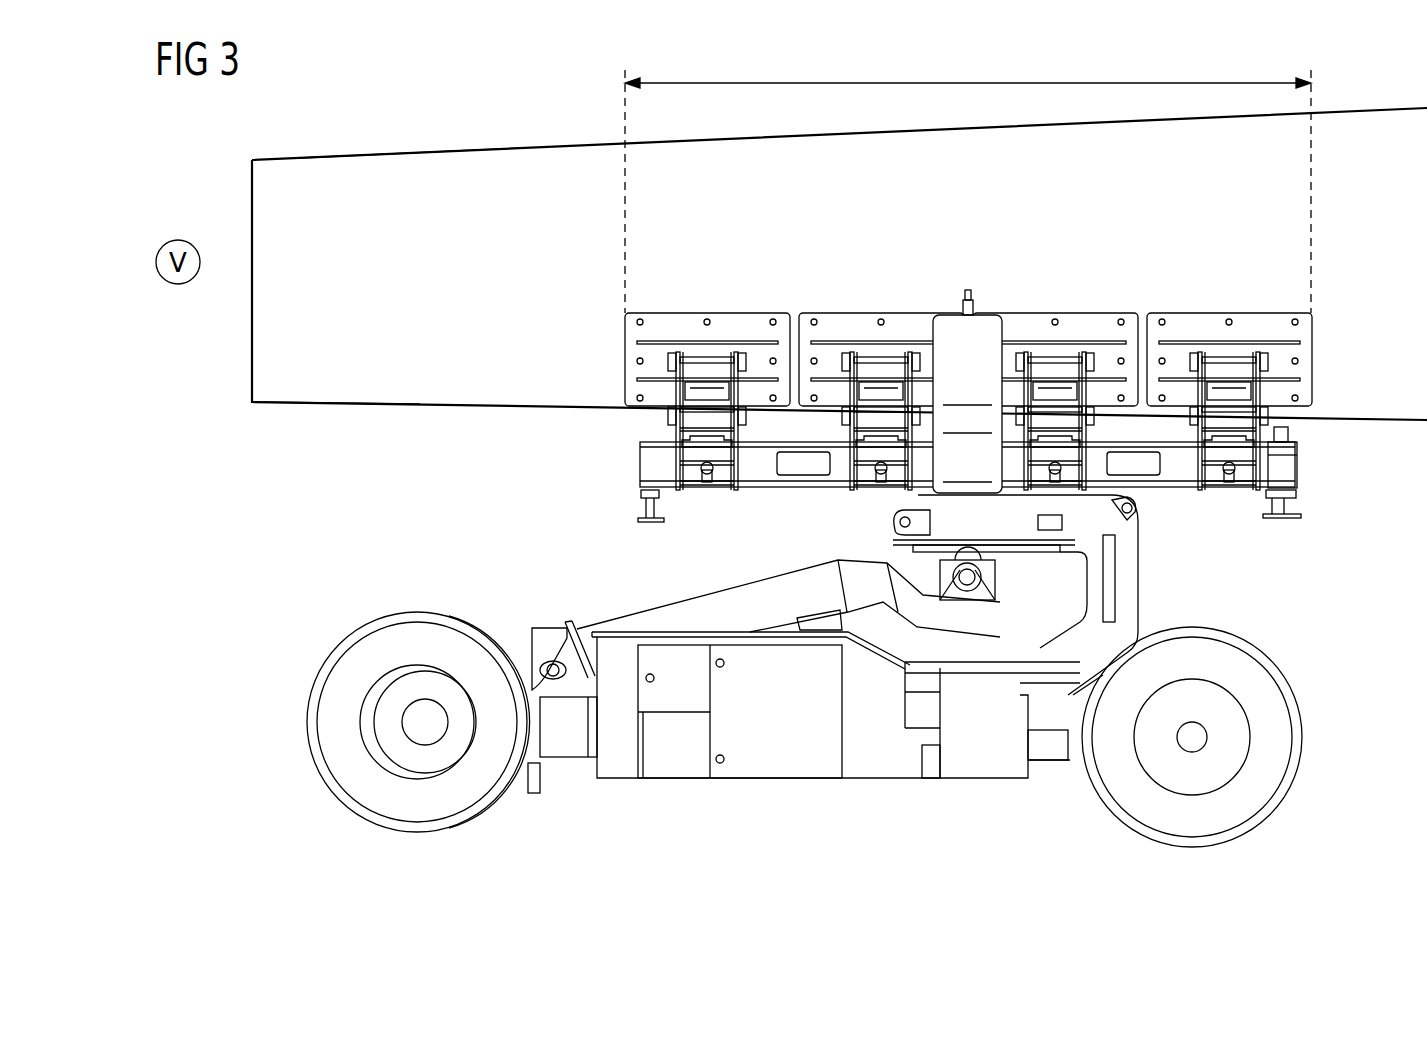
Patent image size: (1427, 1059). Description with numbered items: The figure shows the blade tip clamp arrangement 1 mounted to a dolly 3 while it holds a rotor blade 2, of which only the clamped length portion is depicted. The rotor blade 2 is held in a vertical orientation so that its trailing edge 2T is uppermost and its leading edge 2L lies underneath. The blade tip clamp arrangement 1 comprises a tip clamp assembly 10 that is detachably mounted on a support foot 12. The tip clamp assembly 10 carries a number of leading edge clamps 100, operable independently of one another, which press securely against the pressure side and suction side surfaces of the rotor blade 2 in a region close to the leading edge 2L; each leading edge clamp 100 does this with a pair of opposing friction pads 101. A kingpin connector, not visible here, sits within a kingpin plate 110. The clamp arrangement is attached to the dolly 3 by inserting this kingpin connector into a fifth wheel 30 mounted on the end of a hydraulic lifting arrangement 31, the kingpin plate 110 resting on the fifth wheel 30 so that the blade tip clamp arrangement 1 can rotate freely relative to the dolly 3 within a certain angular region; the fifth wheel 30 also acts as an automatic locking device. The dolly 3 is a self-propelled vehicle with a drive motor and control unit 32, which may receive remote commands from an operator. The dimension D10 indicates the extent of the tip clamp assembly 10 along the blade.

The blade tip clamp arrangement 1 is at (1293, 548).
The rotor blade 2 is at (1370, 116).
The trailing edge 2T is at (328, 158).
The leading edge 2L is at (298, 404).
The dolly 3 is at (538, 553).
The tip clamp assembly 10 is at (848, 521).
The support foot 12 is at (1127, 567).
The fifth wheel 30 is at (1017, 562).
The hydraulic lifting arrangement 31 is at (687, 608).
The drive motor and control unit 32 is at (778, 768).
The leading edge clamp 100 is at (683, 450).
The friction pad 101 is at (640, 388).
The kingpin plate 110 is at (900, 555).
The distance D10 is at (968, 188).